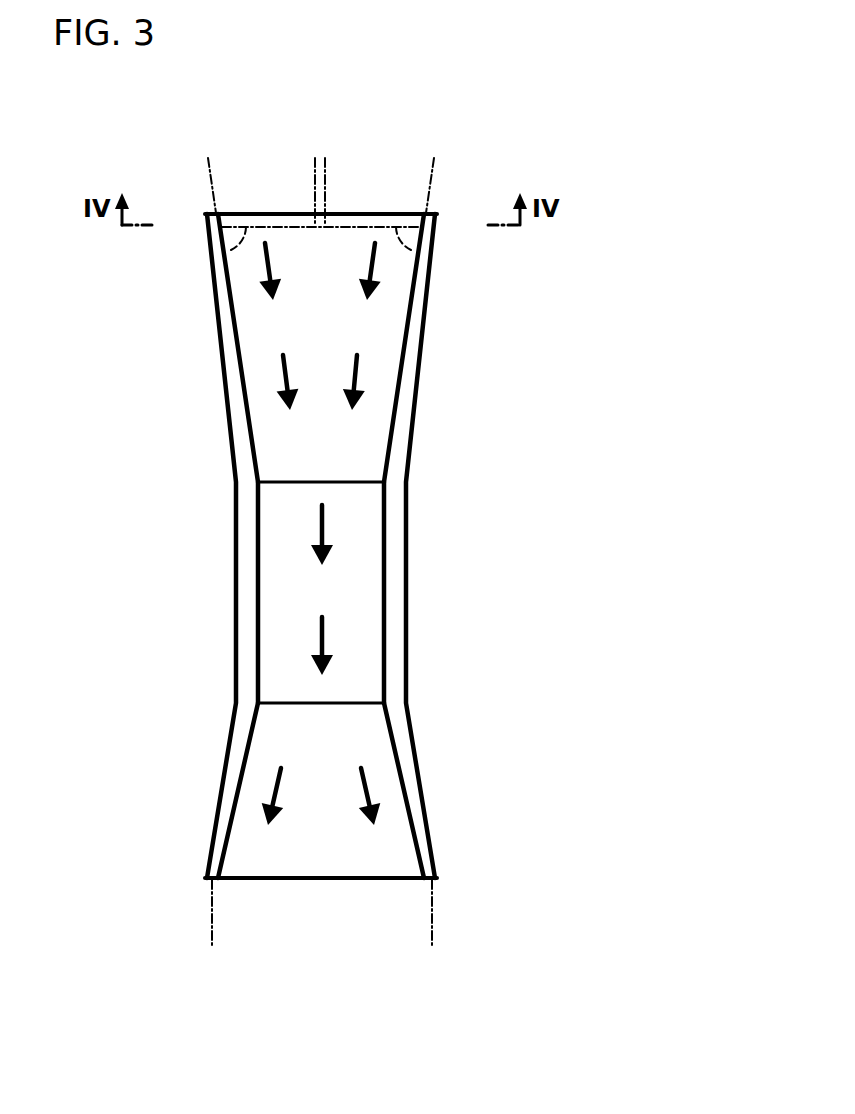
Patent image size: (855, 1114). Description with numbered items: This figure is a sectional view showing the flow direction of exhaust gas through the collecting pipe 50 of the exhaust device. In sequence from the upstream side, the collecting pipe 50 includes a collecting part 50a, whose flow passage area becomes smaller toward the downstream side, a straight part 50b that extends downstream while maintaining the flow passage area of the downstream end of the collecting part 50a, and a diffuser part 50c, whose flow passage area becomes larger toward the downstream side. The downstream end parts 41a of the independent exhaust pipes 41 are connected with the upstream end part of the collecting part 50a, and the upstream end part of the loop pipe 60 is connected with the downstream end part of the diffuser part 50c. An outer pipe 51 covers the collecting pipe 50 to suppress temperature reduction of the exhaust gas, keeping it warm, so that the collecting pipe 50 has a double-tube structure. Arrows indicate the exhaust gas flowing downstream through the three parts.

The independent exhaust pipe 41 is at (243, 176).
The downstream end part 41a is at (233, 249).
The collecting pipe 50 is at (345, 546).
The collecting part 50a is at (392, 352).
The straight part 50b is at (367, 572).
The diffuser part 50c is at (392, 787).
The outer pipe 51 is at (233, 508).
The loop pipe 60 is at (408, 910).